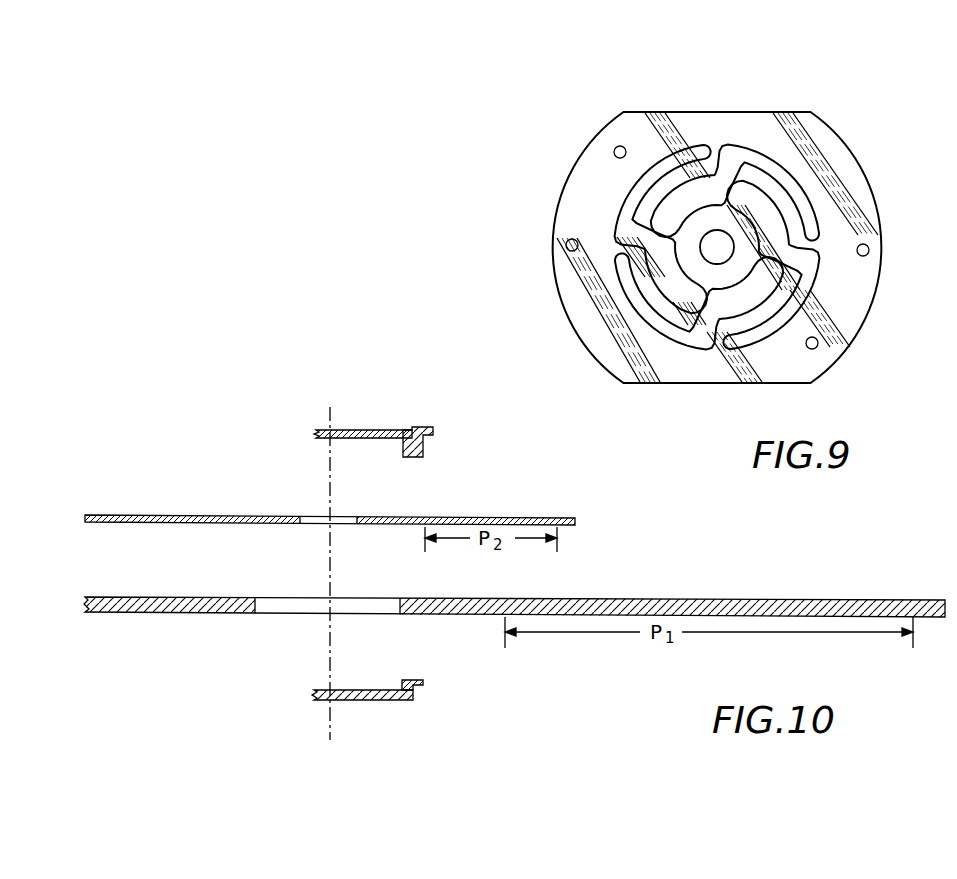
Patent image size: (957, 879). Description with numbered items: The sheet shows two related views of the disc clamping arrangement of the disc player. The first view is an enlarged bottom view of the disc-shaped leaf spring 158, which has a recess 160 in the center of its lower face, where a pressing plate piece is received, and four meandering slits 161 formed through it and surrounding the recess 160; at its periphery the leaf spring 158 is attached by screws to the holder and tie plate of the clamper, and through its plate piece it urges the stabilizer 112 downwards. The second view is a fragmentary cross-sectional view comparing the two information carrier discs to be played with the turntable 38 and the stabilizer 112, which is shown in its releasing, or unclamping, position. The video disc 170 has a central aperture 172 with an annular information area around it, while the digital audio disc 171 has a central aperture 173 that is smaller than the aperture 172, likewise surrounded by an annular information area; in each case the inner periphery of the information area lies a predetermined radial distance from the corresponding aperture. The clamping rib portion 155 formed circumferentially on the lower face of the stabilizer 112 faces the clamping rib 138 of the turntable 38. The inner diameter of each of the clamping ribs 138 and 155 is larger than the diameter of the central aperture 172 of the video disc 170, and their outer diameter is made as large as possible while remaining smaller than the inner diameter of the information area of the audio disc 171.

In FIG. 9, the leaf spring 158 is at (775, 108).
In FIG. 9, the recess 160 is at (716, 240).
In FIG. 9, the meandering slits 161 is at (630, 200).
In FIG. 10, the stabilizer 112 is at (364, 430).
In FIG. 10, the clamping rib portion 155 is at (422, 446).
In FIG. 10, the digital audio disc 171 is at (155, 515).
In FIG. 10, the central aperture 173 is at (310, 515).
In FIG. 10, the video disc 170 is at (170, 602).
In FIG. 10, the central aperture 172 is at (262, 587).
In FIG. 10, the turntable 38 is at (377, 700).
In FIG. 10, the clamping rib 138 is at (410, 680).